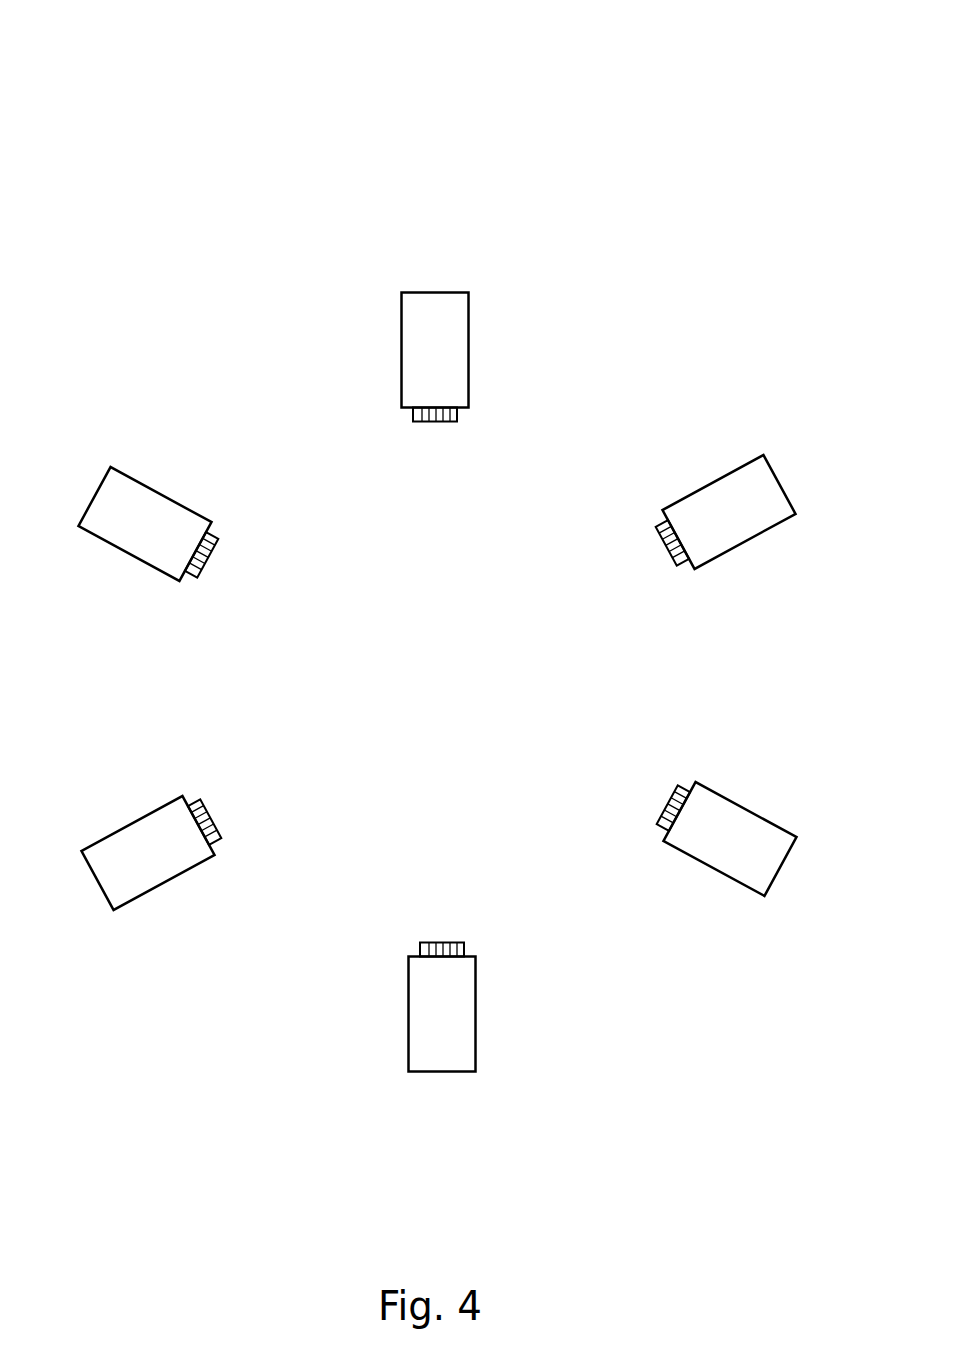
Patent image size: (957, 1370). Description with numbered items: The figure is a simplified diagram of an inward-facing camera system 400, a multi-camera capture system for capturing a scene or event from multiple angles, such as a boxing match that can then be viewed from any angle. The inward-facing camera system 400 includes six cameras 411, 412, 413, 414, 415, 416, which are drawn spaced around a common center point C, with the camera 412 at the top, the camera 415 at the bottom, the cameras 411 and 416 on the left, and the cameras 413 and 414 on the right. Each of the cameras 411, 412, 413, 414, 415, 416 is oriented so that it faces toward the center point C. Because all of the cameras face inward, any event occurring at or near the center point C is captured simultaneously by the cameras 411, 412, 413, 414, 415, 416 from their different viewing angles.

The camera 412 is at (435, 357).
The camera 411 is at (150, 527).
The camera 413 is at (722, 515).
The camera 414 is at (723, 835).
The camera 415 is at (442, 1007).
The camera 416 is at (153, 849).
The inward-facing camera system 400 is at (388, 120).